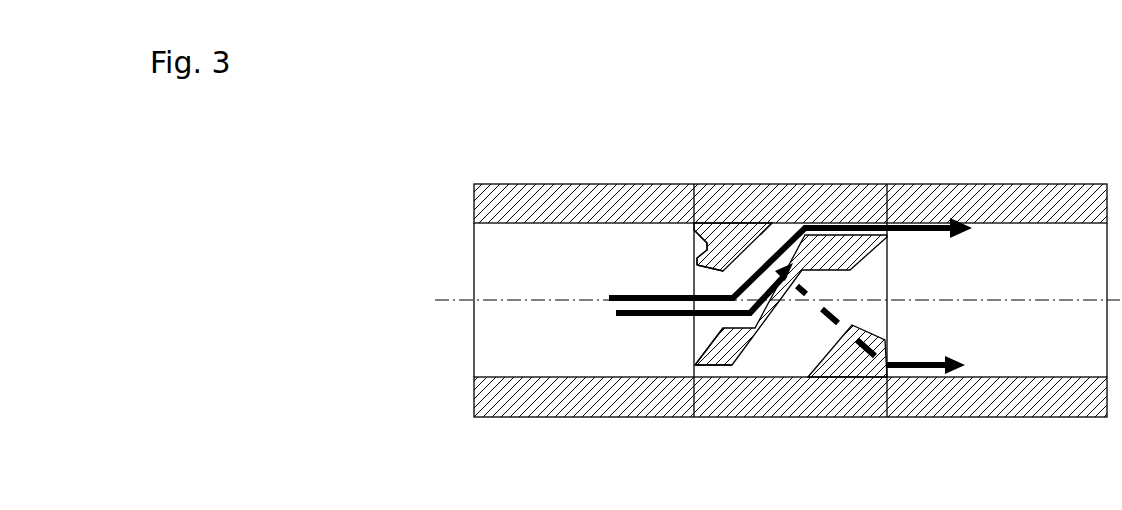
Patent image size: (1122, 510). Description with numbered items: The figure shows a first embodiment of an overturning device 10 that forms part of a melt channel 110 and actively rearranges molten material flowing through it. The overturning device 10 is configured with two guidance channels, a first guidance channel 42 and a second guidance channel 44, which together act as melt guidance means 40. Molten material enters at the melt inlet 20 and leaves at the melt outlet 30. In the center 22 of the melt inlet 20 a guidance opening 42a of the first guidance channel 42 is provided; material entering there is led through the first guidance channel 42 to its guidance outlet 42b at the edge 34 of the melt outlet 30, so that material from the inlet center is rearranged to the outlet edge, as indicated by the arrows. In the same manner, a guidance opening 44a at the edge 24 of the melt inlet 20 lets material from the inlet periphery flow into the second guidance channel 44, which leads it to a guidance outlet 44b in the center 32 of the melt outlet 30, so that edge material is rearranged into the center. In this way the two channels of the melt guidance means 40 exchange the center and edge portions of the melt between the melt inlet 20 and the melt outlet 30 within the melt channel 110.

The overturning device 10 is at (802, 268).
The melt channel 110 is at (495, 187).
The melt inlet 20 is at (628, 260).
The center of the melt inlet 22 is at (698, 287).
The edge of the melt inlet 24 is at (697, 369).
The melt outlet 30 is at (968, 265).
The center of the melt outlet 32 is at (878, 287).
The edge of the melt outlet 34 is at (898, 240).
The melt guidance means 40 is at (823, 315).
The first guidance channel 42 is at (792, 209).
The guidance opening of the first guidance channel 42a is at (718, 276).
The guidance outlet of the first guidance channel 42b is at (880, 217).
The second guidance channel 44 is at (823, 349).
The guidance opening of the second guidance channel 44a is at (719, 385).
The guidance outlet of the second guidance channel 44b is at (855, 326).